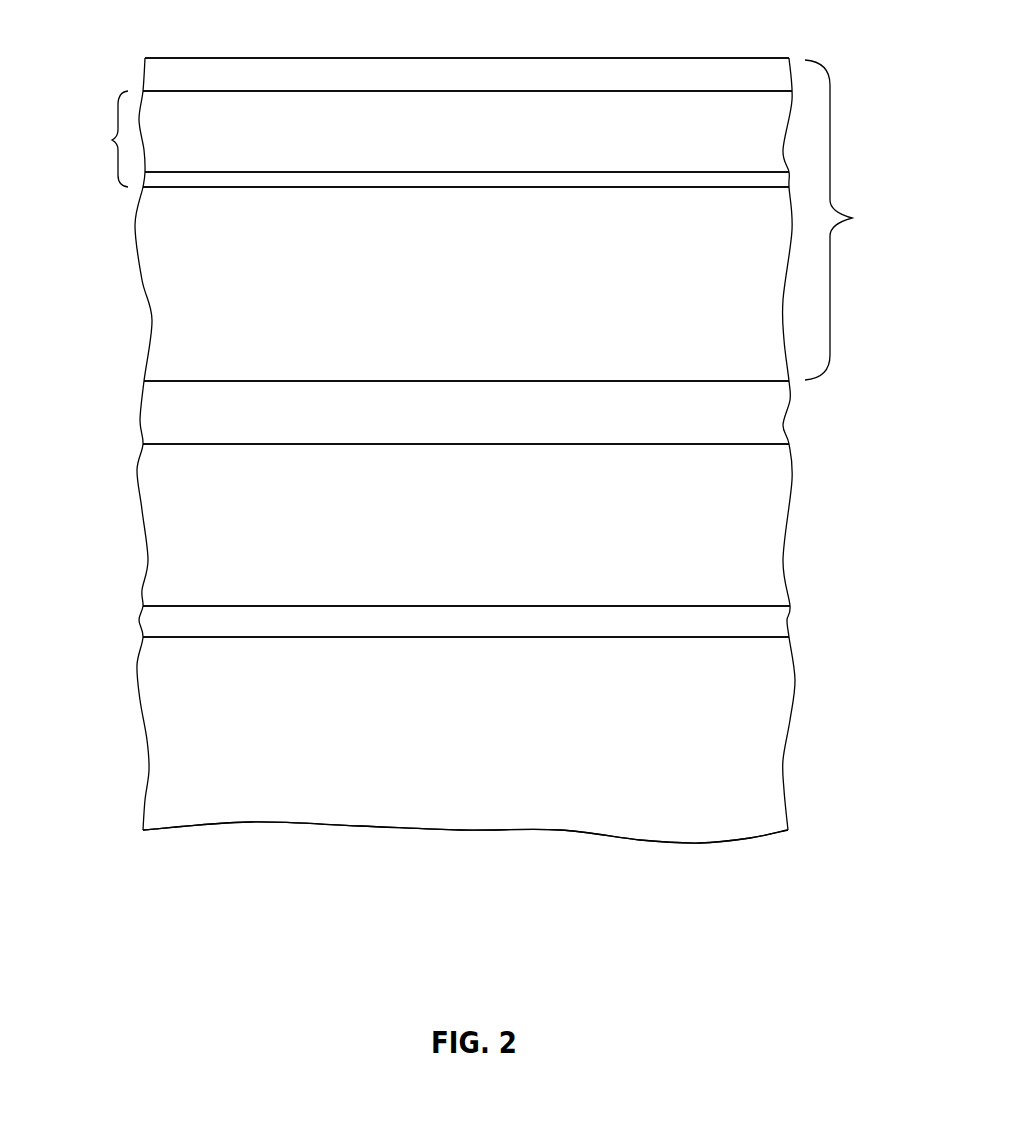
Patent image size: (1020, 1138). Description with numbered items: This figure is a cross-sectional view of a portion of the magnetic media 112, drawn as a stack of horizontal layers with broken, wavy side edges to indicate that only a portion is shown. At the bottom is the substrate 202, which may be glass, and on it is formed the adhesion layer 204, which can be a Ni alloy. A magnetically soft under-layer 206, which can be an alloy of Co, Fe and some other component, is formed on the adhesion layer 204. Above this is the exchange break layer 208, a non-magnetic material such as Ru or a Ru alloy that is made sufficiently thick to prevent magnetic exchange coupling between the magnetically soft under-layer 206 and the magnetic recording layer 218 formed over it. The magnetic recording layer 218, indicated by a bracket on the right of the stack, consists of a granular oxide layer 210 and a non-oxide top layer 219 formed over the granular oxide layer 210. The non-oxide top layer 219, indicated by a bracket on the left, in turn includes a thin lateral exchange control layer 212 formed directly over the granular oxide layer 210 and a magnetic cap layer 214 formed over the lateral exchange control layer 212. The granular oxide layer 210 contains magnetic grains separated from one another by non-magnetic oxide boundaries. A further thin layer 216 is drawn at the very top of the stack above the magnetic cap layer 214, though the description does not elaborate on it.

The magnetic media 112 is at (237, 50).
The substrate 202 is at (501, 734).
The adhesion layer 204 is at (498, 622).
The magnetically soft under-layer 206 is at (501, 525).
The exchange break layer 208 is at (501, 413).
The granular oxide layer 210 is at (501, 284).
The lateral exchange control layer 212 is at (500, 178).
The magnetic cap layer 214 is at (501, 132).
The top layer 216 is at (501, 75).
The magnetic recording layer 218 is at (822, 62).
The non-oxide top layer 219 is at (118, 112).